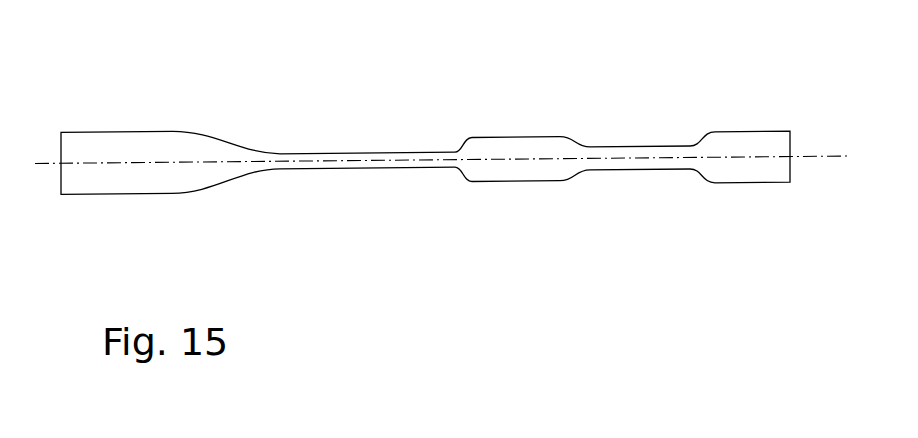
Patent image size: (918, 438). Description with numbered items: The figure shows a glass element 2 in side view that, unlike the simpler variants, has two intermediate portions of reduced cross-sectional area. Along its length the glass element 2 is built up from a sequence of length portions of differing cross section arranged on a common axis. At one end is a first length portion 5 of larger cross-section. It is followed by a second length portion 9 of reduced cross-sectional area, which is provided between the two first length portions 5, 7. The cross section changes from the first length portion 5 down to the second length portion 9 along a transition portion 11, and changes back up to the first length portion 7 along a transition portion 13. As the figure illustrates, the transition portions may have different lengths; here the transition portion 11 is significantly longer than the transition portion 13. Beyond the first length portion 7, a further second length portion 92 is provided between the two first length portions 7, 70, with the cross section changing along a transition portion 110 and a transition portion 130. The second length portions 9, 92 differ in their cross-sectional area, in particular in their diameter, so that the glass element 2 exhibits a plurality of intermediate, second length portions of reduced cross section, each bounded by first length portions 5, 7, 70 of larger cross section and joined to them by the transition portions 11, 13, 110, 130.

The glass element 2 is at (106, 71).
The first length portion 5 is at (145, 133).
The transition portion 11 is at (218, 138).
The second length portion 9 is at (327, 148).
The transition portion 13 is at (465, 147).
The first length portion 7 is at (493, 138).
The transition portion 110 is at (575, 138).
The further second length portion 92 is at (625, 140).
The transition portion 130 is at (700, 138).
The first length portion 70 is at (718, 132).